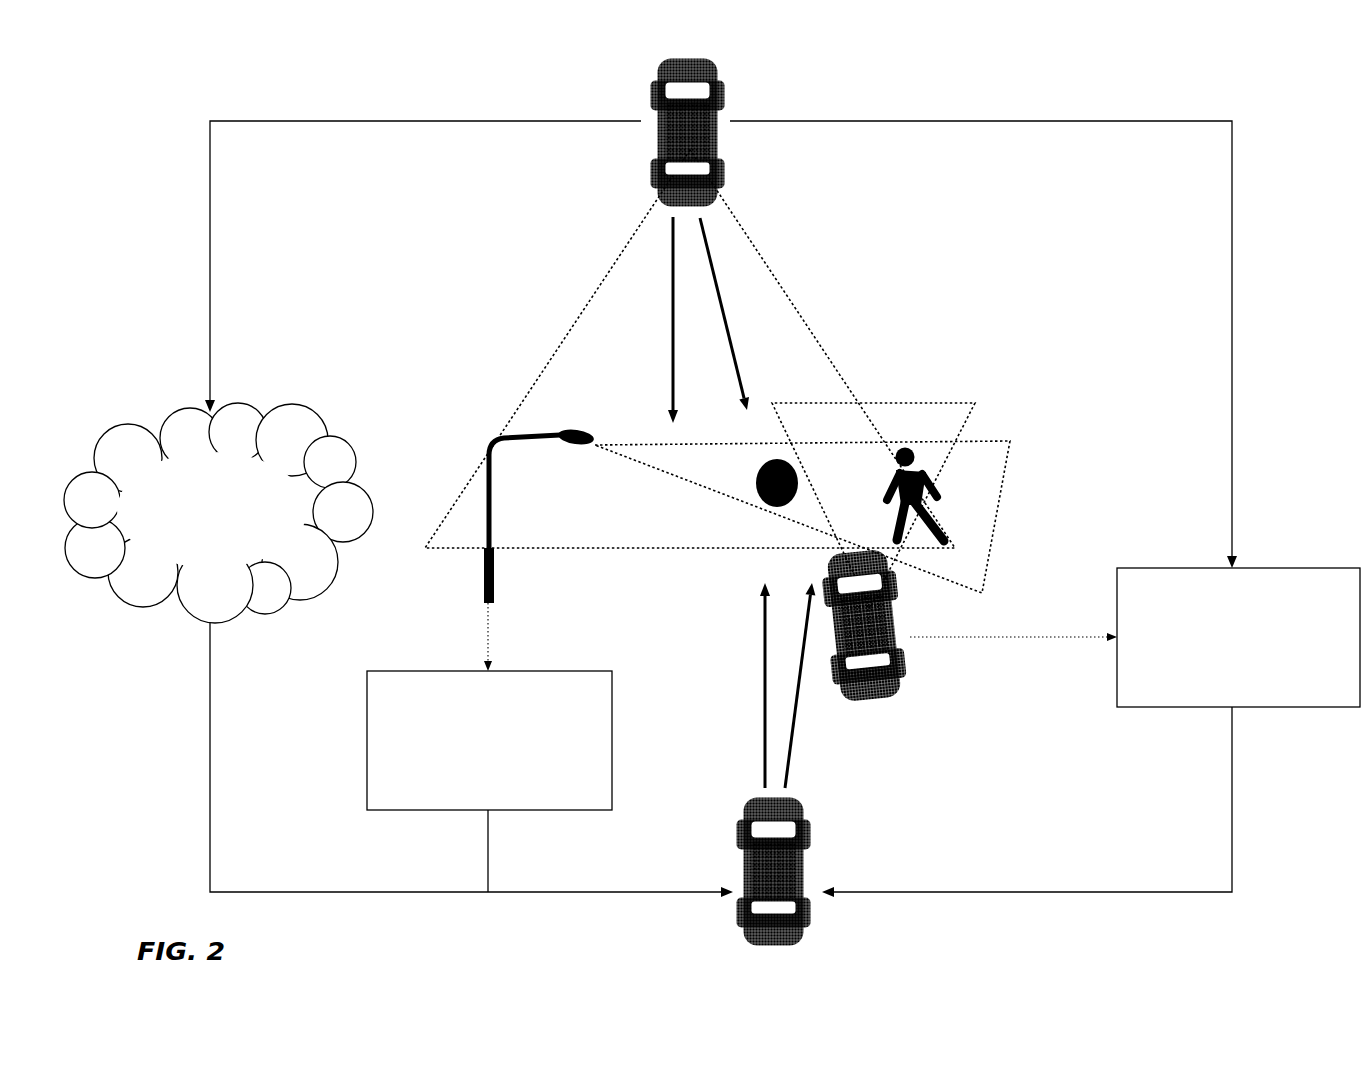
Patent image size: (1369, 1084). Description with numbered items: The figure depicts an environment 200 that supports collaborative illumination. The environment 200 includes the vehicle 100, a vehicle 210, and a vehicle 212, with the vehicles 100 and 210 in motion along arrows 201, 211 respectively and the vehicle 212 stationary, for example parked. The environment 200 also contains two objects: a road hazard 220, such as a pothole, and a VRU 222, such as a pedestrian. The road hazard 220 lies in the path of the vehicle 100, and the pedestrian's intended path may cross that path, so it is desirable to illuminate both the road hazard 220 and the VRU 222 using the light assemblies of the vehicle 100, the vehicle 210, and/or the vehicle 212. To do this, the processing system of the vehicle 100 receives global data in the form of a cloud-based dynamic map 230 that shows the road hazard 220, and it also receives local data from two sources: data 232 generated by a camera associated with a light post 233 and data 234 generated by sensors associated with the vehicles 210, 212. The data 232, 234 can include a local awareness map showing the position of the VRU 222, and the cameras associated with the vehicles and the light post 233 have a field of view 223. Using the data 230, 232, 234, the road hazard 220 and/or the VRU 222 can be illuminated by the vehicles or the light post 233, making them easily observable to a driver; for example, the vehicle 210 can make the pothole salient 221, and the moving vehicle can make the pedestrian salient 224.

The environment 200 is at (98, 85).
The vehicle 100 is at (748, 805).
The vehicle 210 is at (655, 115).
The arrow 211 is at (673, 357).
The salient 221 is at (749, 320).
The field of view 223 is at (869, 383).
The road hazard 220 is at (758, 490).
The VRU 222 is at (885, 498).
The cloud-based dynamic map 230 is at (140, 422).
The data 232 is at (437, 671).
The light post 233 is at (583, 425).
The data 234 is at (1168, 568).
The vehicle 212 is at (895, 672).
The arrow 201 is at (765, 660).
The salient 224 is at (806, 734).